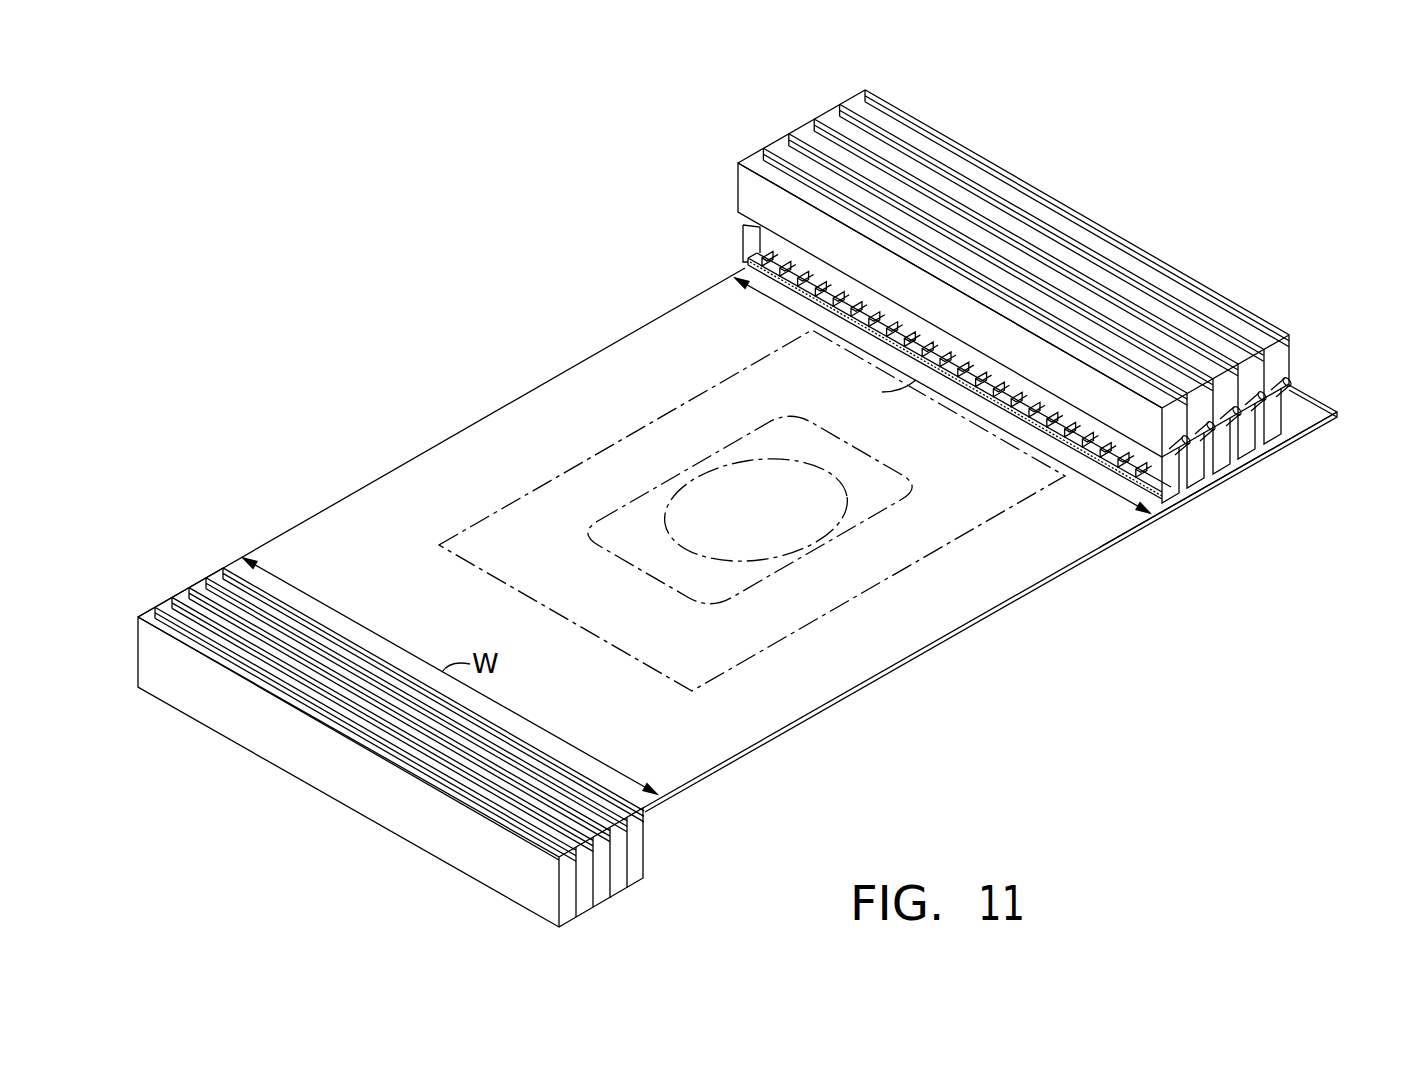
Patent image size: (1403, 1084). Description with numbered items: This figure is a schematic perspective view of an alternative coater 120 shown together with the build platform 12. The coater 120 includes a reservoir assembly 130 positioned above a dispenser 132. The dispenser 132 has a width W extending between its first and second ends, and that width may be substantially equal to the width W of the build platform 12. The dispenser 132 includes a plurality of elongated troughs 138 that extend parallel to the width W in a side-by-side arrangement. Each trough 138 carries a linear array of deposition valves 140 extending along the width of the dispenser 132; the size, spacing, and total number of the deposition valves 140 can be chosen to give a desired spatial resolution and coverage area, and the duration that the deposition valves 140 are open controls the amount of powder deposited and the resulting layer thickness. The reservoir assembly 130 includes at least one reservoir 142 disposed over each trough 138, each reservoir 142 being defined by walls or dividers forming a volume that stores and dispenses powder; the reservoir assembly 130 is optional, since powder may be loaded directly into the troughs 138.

The build platform 12 is at (735, 742).
The alternative coater 120 is at (949, 315).
The reservoir assembly 130 is at (1205, 266).
The dispenser 132 is at (1163, 526).
The elongated troughs 138 is at (1175, 487).
The deposition valves 140 is at (1115, 462).
The reservoir 142 is at (1281, 352).